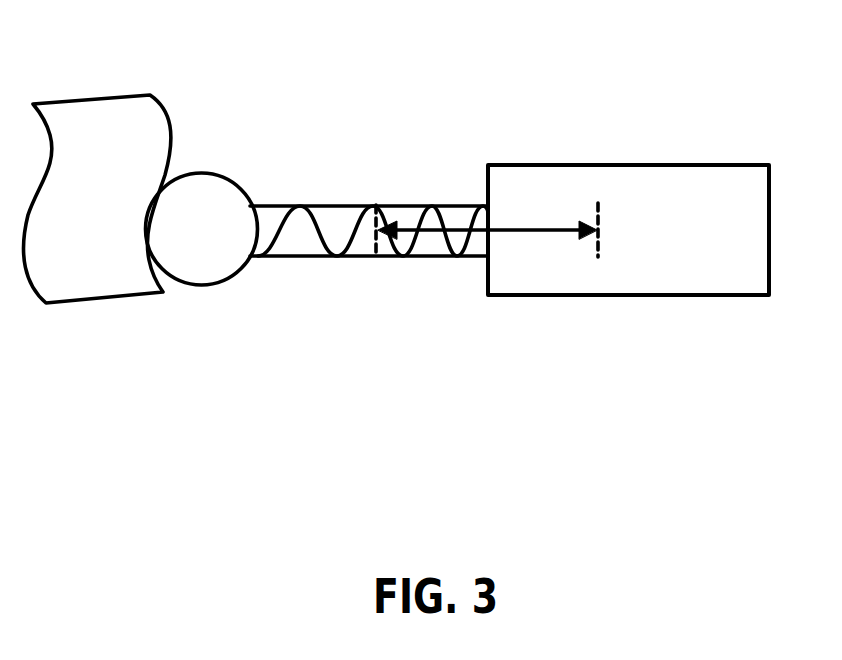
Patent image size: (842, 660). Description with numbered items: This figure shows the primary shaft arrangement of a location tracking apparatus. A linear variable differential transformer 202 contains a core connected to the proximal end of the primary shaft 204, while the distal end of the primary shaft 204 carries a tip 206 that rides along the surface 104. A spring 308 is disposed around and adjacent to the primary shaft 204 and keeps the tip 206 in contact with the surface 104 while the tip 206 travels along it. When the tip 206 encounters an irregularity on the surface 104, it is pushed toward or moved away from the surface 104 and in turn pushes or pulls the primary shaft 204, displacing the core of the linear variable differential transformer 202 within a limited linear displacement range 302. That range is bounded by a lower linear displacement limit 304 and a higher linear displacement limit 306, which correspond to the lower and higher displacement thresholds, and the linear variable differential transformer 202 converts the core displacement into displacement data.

The surface 104 is at (35, 292).
The linear variable differential transformer 202 is at (628, 165).
The primary shaft 204 is at (396, 206).
The tip 206 is at (202, 173).
The limited linear displacement range 302 is at (502, 233).
The lower linear displacement limit 304 is at (598, 238).
The higher linear displacement limit 306 is at (373, 235).
The spring 308 is at (312, 257).